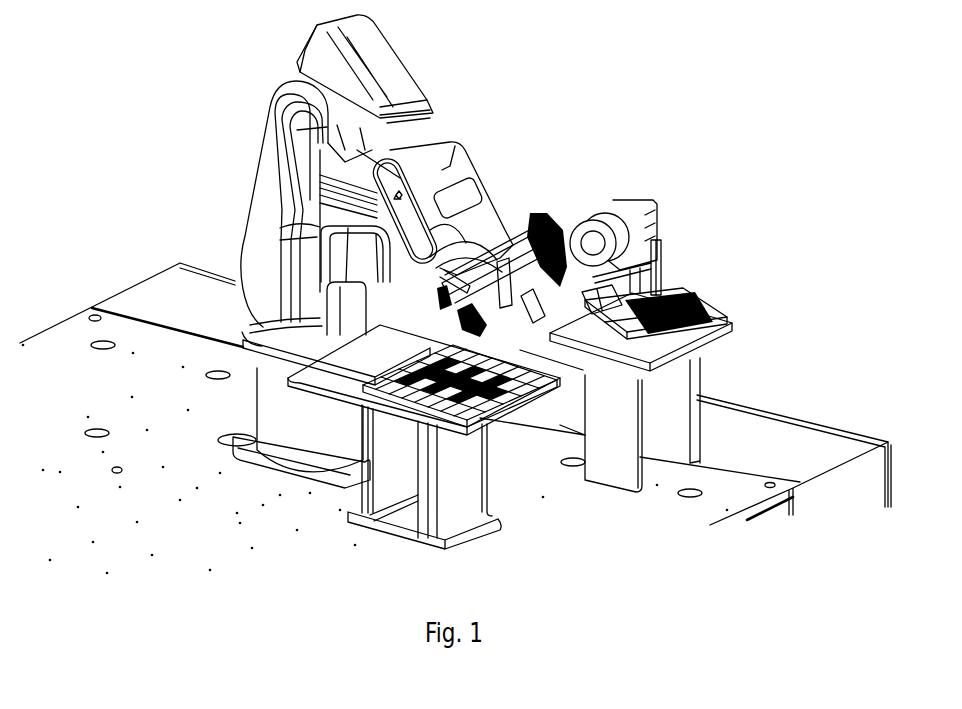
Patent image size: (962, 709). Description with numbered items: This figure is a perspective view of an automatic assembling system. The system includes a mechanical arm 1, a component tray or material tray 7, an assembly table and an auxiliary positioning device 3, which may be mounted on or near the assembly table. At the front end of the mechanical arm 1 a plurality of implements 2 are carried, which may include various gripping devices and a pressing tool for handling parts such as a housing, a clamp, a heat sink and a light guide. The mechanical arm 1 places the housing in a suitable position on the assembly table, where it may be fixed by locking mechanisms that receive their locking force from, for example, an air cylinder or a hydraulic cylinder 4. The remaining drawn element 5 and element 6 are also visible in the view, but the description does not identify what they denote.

The robot arm 1 is at (450, 165).
The gripper 2 is at (513, 233).
The camera 3 is at (620, 217).
The light source post 4 is at (660, 272).
The material tray 5 is at (717, 303).
The robot base column 6 is at (268, 252).
The mounting platform 7 is at (245, 343).